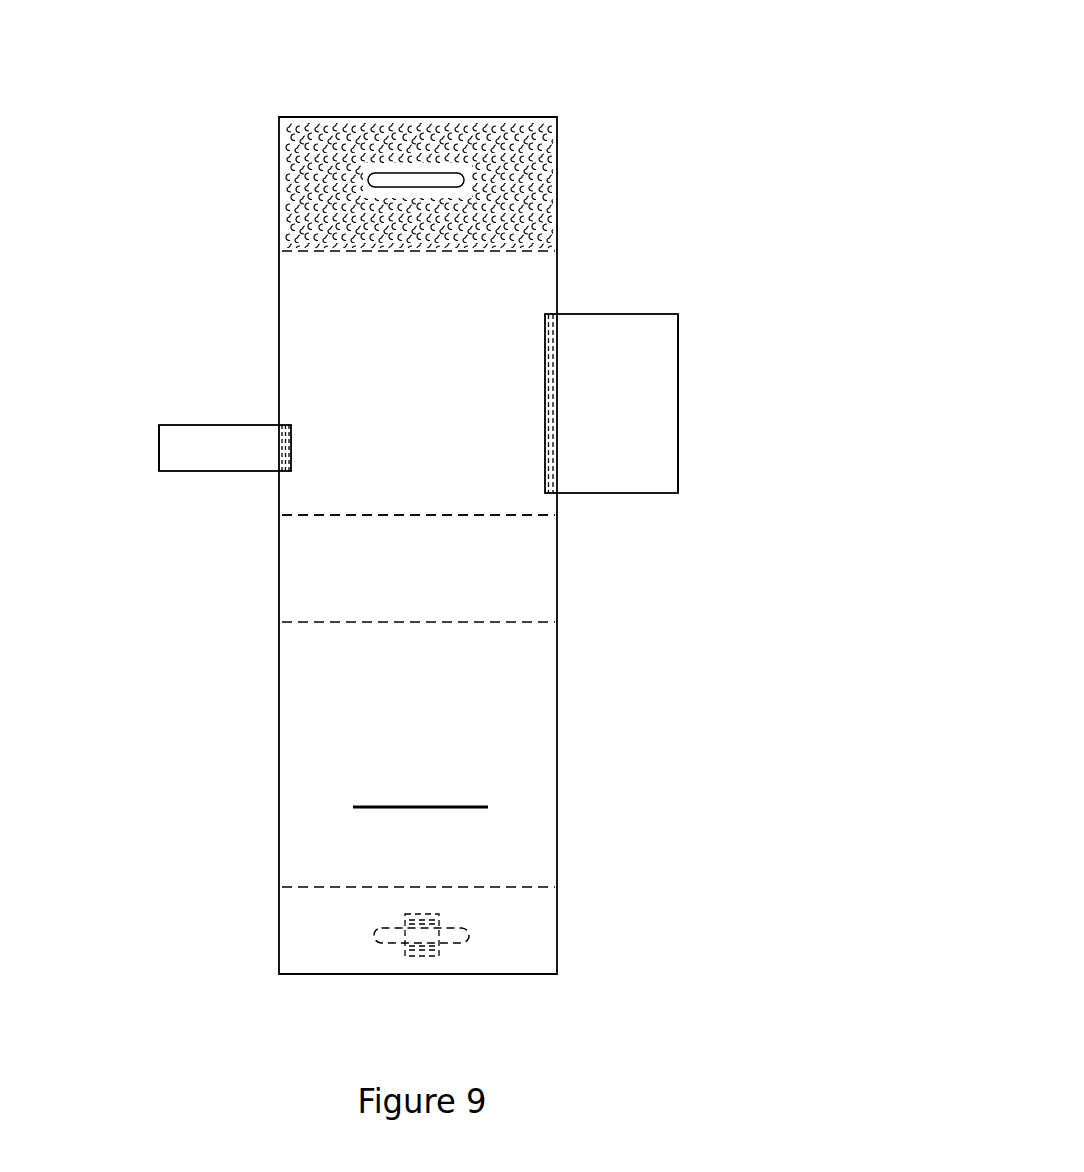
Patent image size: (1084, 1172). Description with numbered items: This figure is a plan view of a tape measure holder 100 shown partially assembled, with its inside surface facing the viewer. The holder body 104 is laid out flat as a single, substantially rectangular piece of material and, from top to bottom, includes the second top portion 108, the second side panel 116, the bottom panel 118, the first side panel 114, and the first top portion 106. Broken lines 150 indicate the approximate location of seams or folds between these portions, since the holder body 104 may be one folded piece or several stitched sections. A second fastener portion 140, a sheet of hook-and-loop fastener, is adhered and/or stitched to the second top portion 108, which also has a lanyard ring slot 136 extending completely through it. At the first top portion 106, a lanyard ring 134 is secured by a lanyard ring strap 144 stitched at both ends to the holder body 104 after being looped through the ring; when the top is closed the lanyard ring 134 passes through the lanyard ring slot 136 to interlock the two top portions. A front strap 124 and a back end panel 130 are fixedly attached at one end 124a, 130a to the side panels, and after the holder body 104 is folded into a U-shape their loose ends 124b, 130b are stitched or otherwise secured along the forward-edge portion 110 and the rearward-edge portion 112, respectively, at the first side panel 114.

The holder 100 is at (628, 98).
The holder body 104 is at (279, 124).
The first top portion 106 is at (294, 934).
The second top portion 108 is at (282, 224).
The forward-edge portion 110 is at (279, 513).
The rearward-edge portion 112 is at (540, 507).
The first side panel 114 is at (343, 798).
The second side panel 116 is at (342, 377).
The bottom panel 118 is at (311, 594).
The front strap 124 is at (182, 445).
The attached end of front strap 124a is at (291, 448).
The loose end of front strap 124b is at (159, 450).
The back end panel 130 is at (650, 395).
The attached end of back end panel 130a is at (545, 418).
The loose end of back end panel 130b is at (678, 438).
The lanyard ring 134 is at (437, 940).
The lanyard ring slot 136 is at (418, 174).
The second fastener portion 140 is at (510, 138).
The lanyard ring strap 144 is at (404, 956).
The broken lines 150 is at (520, 251).